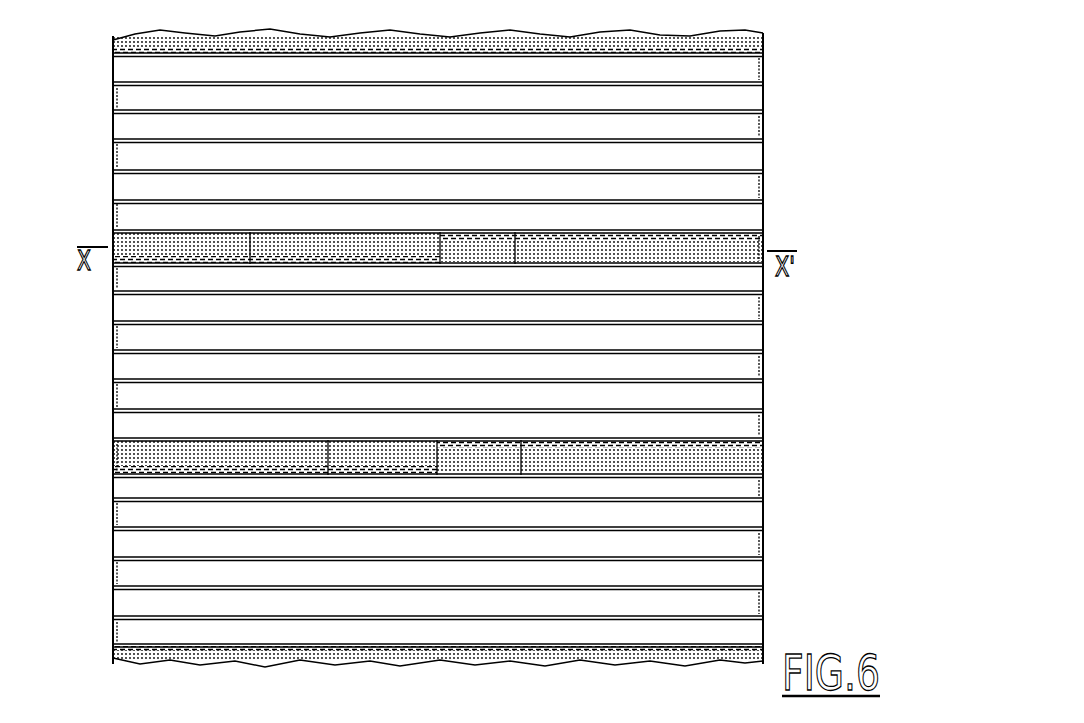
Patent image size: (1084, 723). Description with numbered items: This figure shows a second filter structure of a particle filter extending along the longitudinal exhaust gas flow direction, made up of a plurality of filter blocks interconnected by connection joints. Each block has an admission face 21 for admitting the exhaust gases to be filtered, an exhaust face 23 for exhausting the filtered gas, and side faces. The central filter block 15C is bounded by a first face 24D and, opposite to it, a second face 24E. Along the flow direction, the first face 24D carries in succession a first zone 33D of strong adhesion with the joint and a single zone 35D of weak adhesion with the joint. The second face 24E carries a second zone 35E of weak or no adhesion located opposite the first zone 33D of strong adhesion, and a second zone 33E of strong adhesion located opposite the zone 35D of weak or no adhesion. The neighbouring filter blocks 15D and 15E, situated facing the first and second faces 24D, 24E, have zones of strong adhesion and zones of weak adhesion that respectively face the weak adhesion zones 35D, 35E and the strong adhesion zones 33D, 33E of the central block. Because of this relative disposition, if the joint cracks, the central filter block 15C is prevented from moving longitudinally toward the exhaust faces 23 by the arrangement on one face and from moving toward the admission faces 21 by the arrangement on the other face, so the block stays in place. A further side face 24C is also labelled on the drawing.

The filter block 15D is at (98, 194).
The central filter block 15C is at (93, 429).
The filter block 15E is at (93, 571).
The admission face 21 is at (112, 366).
The exhaust face 23 is at (765, 343).
The first face 24D is at (172, 272).
The electrode layer C 24C is at (740, 428).
The second face 24E is at (742, 634).
The first zone of strong adhesion 33D is at (517, 231).
The zone of weak adhesion 35D is at (252, 231).
The second zone of strong adhesion 33E is at (329, 439).
The second zone of weak adhesion 35E is at (522, 439).